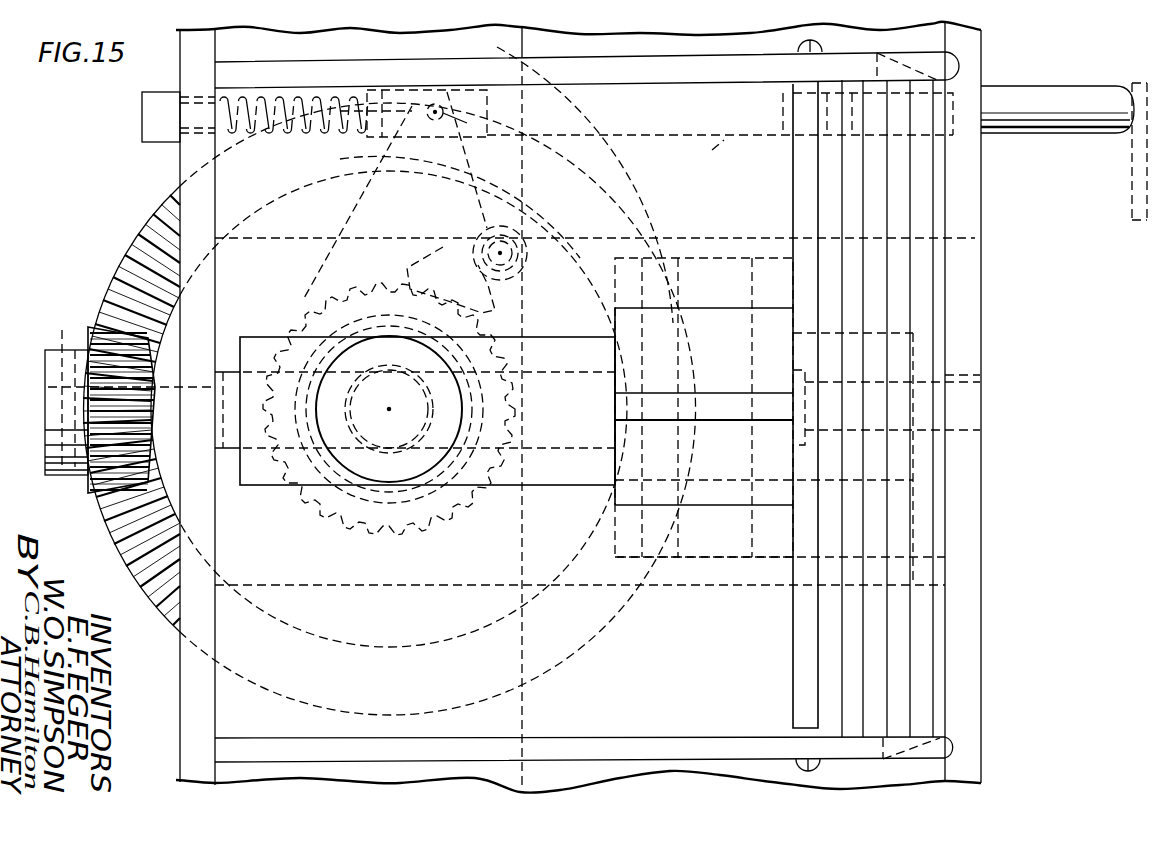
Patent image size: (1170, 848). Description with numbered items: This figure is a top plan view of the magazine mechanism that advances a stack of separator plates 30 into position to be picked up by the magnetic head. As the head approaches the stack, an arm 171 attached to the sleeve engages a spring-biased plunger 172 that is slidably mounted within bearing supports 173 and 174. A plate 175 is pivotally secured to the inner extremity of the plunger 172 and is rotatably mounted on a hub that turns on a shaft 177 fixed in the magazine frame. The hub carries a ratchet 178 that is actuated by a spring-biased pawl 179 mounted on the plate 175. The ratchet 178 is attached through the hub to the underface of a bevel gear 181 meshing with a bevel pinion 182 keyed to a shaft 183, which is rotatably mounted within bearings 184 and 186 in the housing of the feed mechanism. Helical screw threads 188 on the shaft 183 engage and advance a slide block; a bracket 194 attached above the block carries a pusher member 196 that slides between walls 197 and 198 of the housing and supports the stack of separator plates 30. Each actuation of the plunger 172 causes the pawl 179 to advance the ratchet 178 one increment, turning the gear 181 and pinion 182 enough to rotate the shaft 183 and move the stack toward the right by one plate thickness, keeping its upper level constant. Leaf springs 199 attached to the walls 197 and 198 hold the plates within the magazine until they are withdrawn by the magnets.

The separator plates 30 is at (920, 327).
The arm 171 is at (1133, 180).
The spring-biased plunger 172 is at (724, 146).
The bearing support 173 is at (982, 67).
The bearing support 174 is at (572, 85).
The plate 175 is at (535, 203).
The shaft 177 is at (445, 530).
The ratchet 178 is at (497, 467).
The spring-biased pawl 179 is at (473, 242).
The bevel gear 181 is at (165, 597).
The bevel pinion 182 is at (86, 478).
The shaft 183 is at (66, 347).
The bearing 184 is at (220, 340).
The bearing 186 is at (970, 375).
The helical screw threads 188 is at (727, 382).
The bracket 194 is at (640, 405).
The pusher member 196 is at (803, 210).
The wall 197 is at (712, 743).
The wall 198 is at (752, 62).
The leaf springs 199 is at (962, 62).